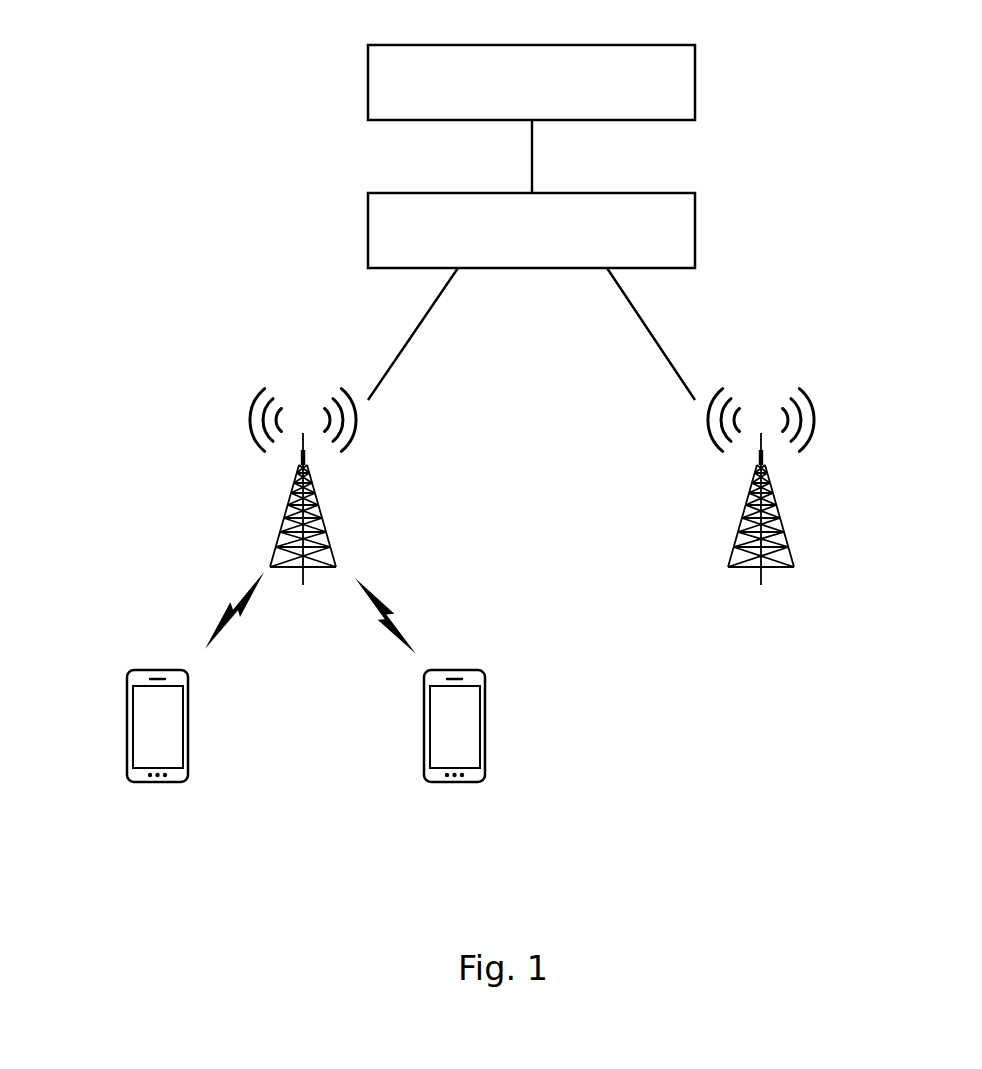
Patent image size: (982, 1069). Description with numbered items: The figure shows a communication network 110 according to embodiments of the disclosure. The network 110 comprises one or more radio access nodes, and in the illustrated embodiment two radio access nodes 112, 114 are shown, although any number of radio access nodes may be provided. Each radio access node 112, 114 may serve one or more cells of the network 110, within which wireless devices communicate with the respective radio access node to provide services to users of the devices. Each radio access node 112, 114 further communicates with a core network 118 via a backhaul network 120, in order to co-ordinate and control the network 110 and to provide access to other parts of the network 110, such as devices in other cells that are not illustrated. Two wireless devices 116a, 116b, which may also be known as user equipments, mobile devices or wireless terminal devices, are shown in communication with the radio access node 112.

The communication network 110 is at (840, 39).
The radio access node 112 is at (272, 482).
The radio access node 114 is at (788, 482).
The wireless device 116a is at (427, 738).
The wireless device 116b is at (128, 738).
The core network 118 is at (368, 74).
The backhaul network 120 is at (368, 222).